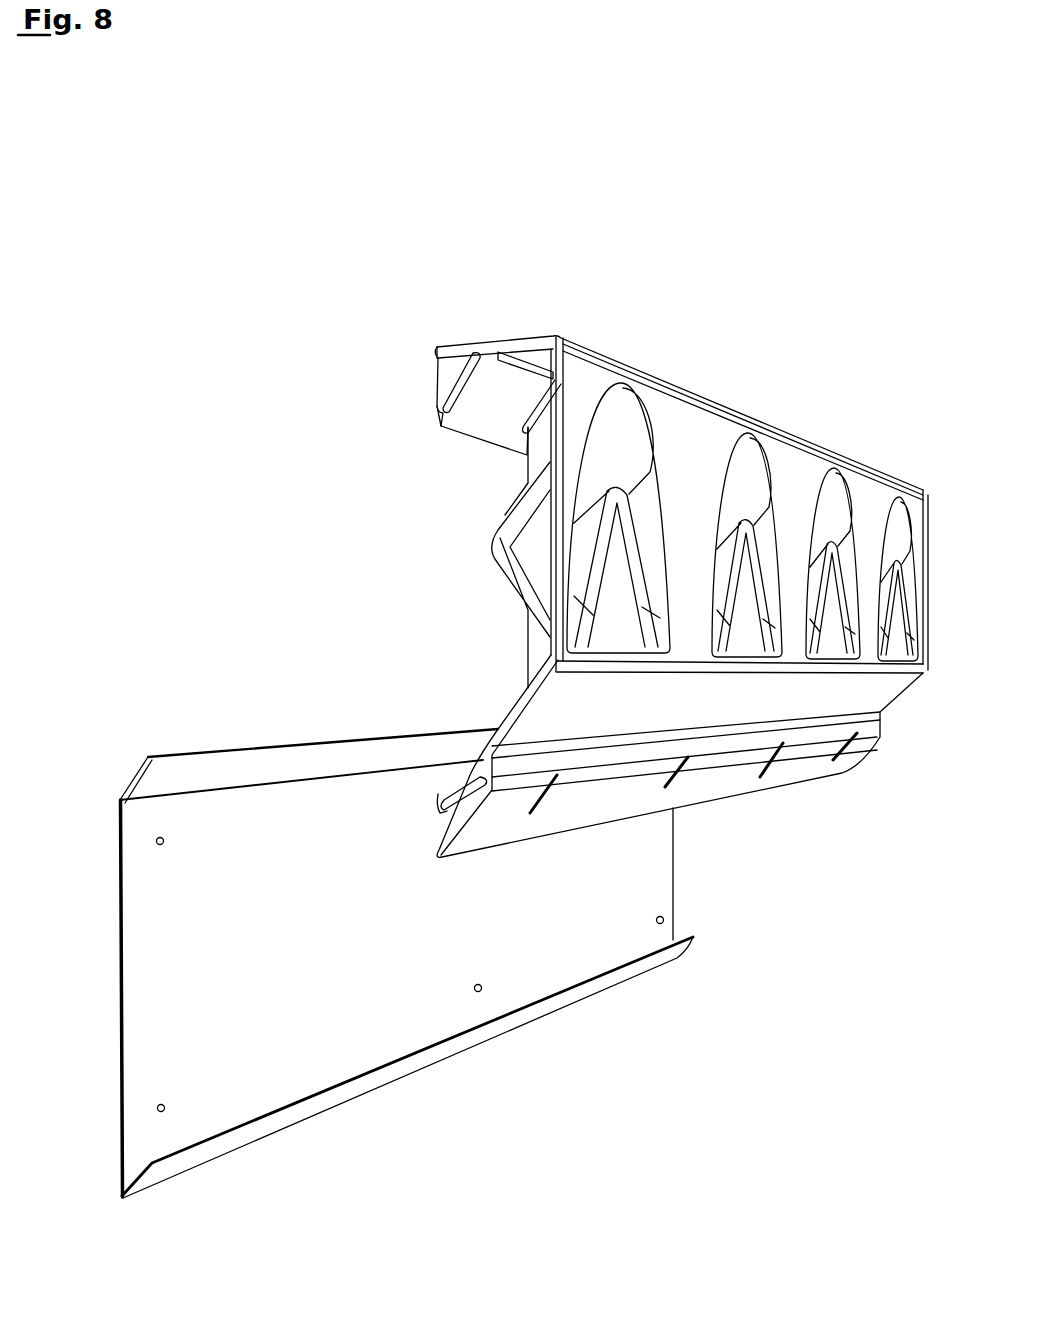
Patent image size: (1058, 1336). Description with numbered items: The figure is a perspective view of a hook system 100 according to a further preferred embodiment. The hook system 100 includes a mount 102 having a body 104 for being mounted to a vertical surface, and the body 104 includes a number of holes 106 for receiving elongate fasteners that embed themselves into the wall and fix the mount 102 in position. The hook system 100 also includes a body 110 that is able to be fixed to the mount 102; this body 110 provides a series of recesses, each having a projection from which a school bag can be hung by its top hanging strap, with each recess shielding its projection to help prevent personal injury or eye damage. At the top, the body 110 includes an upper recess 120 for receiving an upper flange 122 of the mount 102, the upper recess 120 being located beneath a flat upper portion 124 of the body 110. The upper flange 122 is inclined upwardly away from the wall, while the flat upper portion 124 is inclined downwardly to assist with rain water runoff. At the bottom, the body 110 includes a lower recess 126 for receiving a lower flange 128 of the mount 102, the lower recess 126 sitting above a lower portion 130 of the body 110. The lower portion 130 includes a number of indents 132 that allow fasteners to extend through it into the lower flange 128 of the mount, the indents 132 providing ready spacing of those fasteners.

The hook system 100 is at (748, 316).
The mount 102 is at (677, 828).
The body 104 is at (675, 862).
The holes 106 is at (165, 849).
The body 110 is at (800, 464).
The upper recess 120 is at (430, 427).
The upper flange 122 is at (213, 751).
The flat upper portion 124 is at (482, 338).
The lower recess 126 is at (426, 842).
The lower flange 128 is at (340, 1090).
The lower portion 130 is at (497, 832).
The indents 132 is at (545, 798).